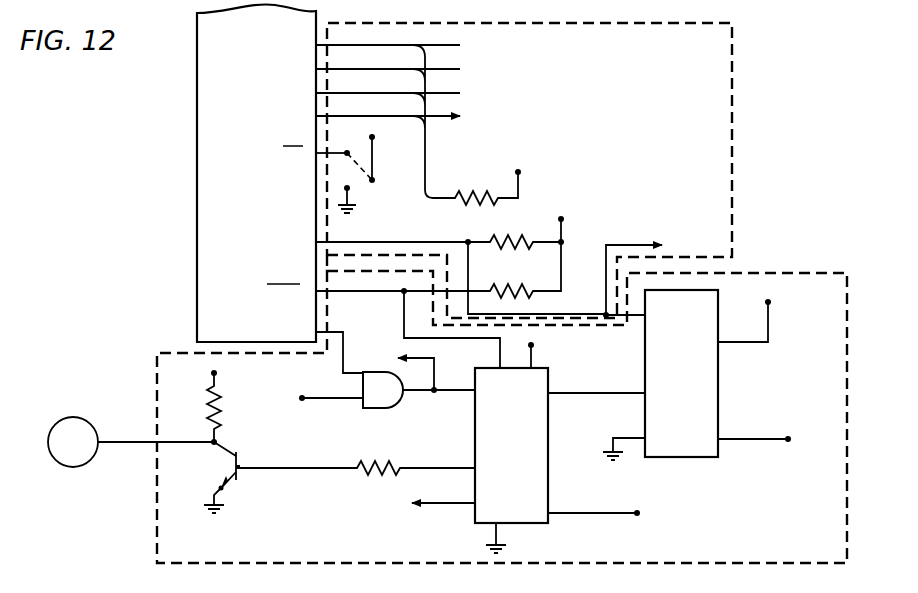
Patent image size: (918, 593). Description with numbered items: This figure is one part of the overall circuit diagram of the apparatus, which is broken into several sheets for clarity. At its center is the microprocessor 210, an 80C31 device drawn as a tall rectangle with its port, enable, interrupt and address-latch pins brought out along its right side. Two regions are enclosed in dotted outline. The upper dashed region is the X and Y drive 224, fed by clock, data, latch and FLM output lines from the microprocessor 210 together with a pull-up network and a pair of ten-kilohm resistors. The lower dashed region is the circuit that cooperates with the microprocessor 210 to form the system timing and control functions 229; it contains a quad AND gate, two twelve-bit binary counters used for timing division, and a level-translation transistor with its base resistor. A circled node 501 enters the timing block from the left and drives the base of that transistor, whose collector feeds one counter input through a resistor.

The microprocessor 210 is at (190, 103).
The X and Y drive 224 is at (742, 70).
The system timing and control functions 229 is at (830, 268).
The input signal node 501 is at (131, 442).